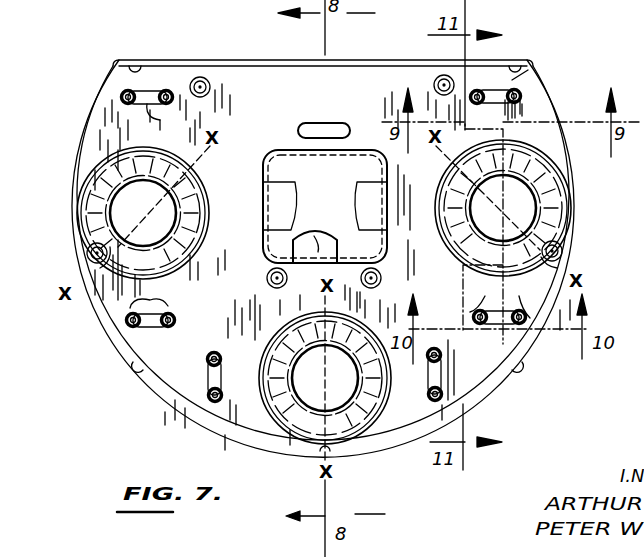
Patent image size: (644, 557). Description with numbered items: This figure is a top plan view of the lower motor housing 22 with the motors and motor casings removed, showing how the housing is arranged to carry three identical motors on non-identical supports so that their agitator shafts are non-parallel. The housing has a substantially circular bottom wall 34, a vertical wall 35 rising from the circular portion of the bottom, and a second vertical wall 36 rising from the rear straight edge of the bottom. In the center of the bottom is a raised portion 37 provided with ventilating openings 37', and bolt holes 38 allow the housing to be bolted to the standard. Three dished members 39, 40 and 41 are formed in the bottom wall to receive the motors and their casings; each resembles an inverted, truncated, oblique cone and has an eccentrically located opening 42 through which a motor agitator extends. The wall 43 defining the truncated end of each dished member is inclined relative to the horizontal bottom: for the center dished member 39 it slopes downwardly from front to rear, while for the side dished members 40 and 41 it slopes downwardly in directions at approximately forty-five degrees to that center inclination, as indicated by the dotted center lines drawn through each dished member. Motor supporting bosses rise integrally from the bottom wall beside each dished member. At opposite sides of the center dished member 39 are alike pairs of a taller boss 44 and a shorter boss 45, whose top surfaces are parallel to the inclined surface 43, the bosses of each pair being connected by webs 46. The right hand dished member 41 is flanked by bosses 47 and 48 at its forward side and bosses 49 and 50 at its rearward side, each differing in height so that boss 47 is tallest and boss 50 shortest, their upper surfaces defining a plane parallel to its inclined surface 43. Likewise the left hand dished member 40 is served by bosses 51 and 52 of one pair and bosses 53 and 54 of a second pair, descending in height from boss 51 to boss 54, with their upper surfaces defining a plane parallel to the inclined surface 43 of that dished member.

The motor housing 22 is at (580, 204).
The bottom wall 34 is at (102, 120).
The vertical wall 35 is at (80, 155).
The vertical wall 36 is at (182, 56).
The raised portion 37 is at (317, 193).
The ventilating openings 37' is at (331, 213).
The bolt holes 38 is at (205, 77).
The center dished member 39 is at (288, 400).
The left hand dished member 40 is at (110, 201).
The right hand dished member 41 is at (542, 224).
The eccentrically located opening 42 is at (120, 219).
The wall 43 is at (170, 236).
The taller boss 44 is at (210, 398).
The shorter boss 45 is at (208, 362).
The webs 46 is at (538, 44).
The boss 47 is at (520, 308).
The boss 48 is at (474, 310).
The boss 49 is at (524, 94).
The boss 50 is at (475, 91).
The boss 51 is at (128, 330).
The boss 52 is at (174, 318).
The boss 53 is at (120, 96).
The boss 54 is at (161, 90).